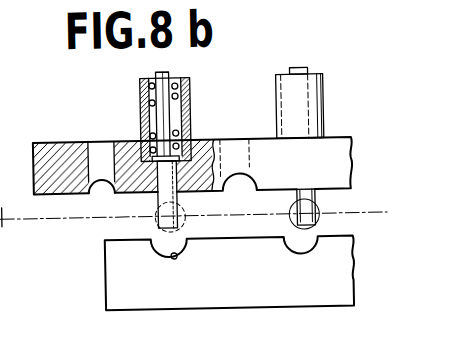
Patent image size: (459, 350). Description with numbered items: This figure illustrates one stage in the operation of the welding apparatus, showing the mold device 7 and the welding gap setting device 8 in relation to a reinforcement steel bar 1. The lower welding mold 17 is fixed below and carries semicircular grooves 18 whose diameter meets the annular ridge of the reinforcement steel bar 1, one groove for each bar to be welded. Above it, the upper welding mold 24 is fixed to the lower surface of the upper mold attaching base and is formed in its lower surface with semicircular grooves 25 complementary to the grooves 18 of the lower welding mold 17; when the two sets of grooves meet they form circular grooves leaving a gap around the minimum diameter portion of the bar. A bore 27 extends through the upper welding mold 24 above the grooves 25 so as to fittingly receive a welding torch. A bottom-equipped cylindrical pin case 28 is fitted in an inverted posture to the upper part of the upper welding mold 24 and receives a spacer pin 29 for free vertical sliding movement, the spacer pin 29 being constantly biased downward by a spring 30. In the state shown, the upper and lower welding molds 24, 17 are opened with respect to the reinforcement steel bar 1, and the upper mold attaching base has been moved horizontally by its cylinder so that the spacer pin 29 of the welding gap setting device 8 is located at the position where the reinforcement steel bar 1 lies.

The reinforcement steel bar 1 is at (317, 217).
The mold device 7 is at (338, 136).
The welding gap setting device 8 is at (193, 97).
The lower welding mold 17 is at (155, 289).
The semicircular grooves 18 is at (176, 258).
The upper welding mold 24 is at (65, 154).
The semicircular grooves 25 is at (88, 186).
The bore 27 is at (95, 146).
The pin case 28 is at (190, 118).
The spacer pin 29 is at (178, 229).
The spring 30 is at (152, 87).